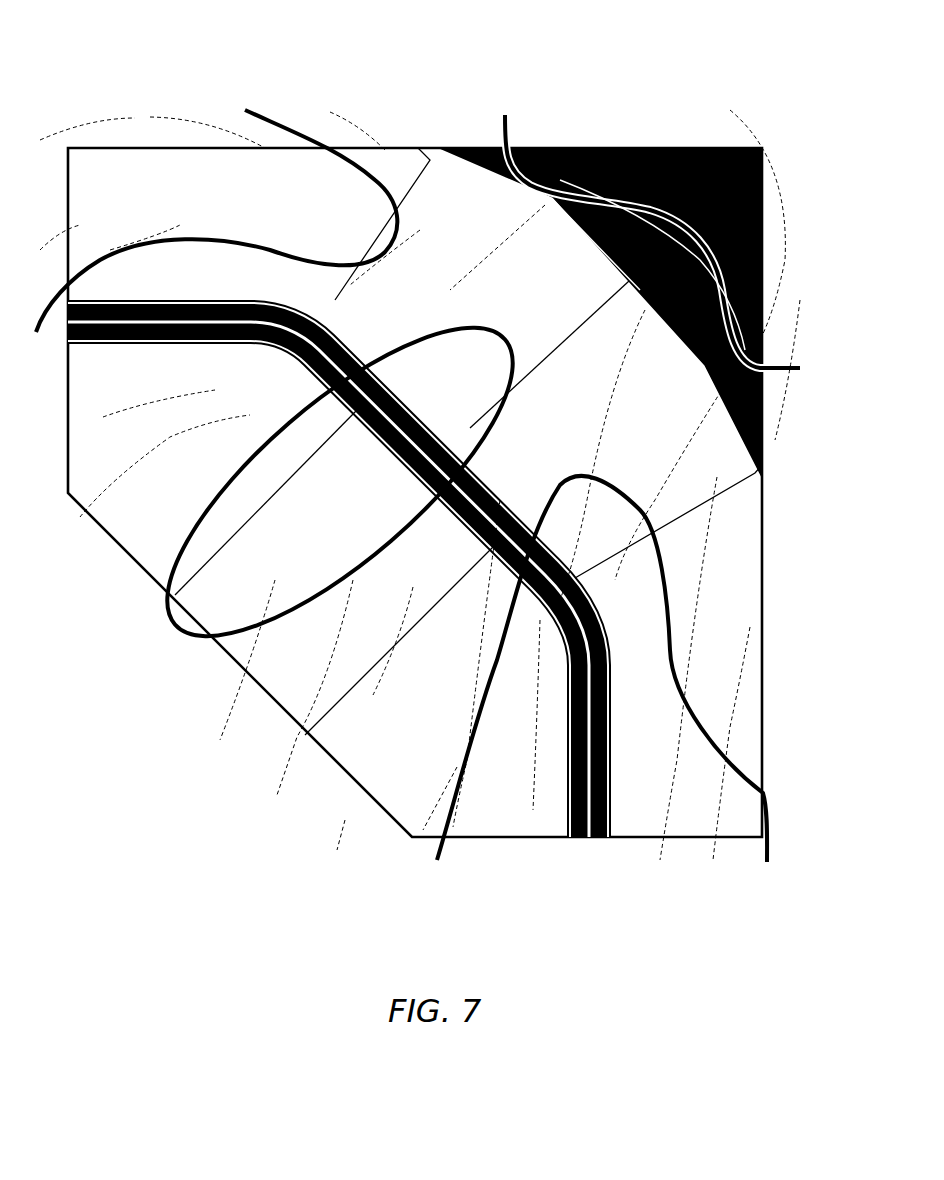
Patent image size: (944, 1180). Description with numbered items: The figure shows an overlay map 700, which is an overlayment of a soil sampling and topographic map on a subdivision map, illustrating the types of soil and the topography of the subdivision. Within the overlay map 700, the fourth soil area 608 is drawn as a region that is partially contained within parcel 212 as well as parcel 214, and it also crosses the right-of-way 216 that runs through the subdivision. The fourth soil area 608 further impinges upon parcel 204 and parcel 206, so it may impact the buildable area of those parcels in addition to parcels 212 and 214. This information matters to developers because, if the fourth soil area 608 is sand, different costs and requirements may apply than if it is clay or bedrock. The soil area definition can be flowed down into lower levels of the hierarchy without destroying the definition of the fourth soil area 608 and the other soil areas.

The parcel 204 is at (452, 213).
The parcel 206 is at (650, 362).
The parcel 212 is at (310, 677).
The parcel 214 is at (112, 470).
The right-of-way 216 is at (590, 836).
The soil area S4 608 is at (237, 570).
The overlay map 700 is at (228, 843).